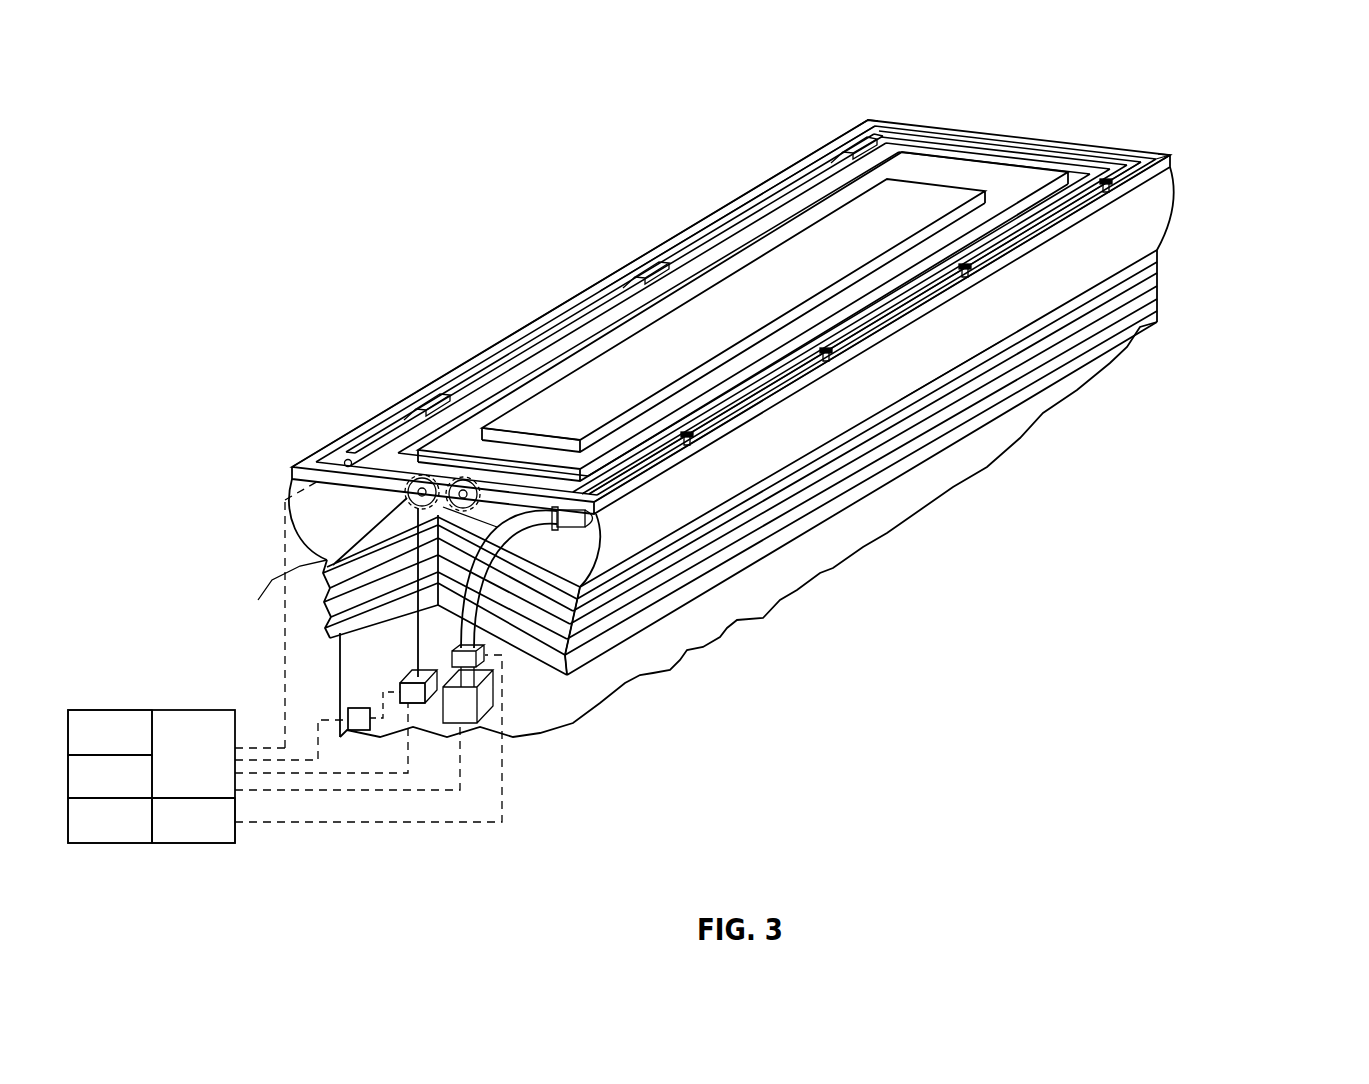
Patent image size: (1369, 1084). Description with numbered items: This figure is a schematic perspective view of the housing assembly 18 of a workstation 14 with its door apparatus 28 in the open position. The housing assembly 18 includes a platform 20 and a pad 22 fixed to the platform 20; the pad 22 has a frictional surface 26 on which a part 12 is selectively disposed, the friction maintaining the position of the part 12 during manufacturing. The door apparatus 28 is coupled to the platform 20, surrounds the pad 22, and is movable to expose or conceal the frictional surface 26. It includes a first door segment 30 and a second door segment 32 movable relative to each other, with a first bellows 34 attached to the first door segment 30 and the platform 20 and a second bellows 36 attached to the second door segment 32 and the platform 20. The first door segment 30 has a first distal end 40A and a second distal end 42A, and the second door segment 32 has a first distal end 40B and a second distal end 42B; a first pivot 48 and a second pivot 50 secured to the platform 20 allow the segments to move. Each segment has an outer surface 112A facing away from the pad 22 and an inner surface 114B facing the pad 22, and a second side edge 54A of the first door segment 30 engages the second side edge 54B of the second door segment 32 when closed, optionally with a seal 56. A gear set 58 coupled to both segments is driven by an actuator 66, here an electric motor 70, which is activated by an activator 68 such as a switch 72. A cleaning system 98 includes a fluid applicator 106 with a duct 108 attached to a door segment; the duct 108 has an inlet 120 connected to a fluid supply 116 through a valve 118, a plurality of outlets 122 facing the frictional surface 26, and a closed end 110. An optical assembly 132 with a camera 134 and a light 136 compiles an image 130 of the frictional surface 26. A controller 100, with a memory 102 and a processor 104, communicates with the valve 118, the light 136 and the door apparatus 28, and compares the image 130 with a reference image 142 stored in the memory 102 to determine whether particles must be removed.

The part 12 is at (933, 193).
The workstation 14 is at (1262, 193).
The housing assembly 18 is at (195, 429).
The platform 20 is at (1060, 163).
The pad 22 is at (983, 175).
The frictional surface 26 is at (486, 405).
The door apparatus 28 is at (252, 555).
The first door segment 30 is at (1147, 208).
The second door segment 32 is at (292, 480).
The first bellows 34 is at (1152, 250).
The second bellows 36 is at (340, 645).
The first distal end of the first door segment 40A is at (573, 553).
The first distal end of the second door segment 40B is at (327, 560).
The second distal end of the first door segment 42A is at (1176, 168).
The second distal end of the second door segment 42B is at (870, 116).
The first pivot 48 is at (405, 473).
The second pivot 50 is at (410, 500).
The second side edge of the first door segment 54A is at (775, 375).
The second side edge of the second door segment 54B is at (580, 300).
The seal 56 is at (763, 182).
The gear set 58 is at (350, 494).
The actuator 66 is at (405, 706).
The activator 68 is at (348, 710).
The electric motor 70 is at (412, 693).
The position sensor 72 is at (359, 719).
The cleaning system 98 is at (660, 458).
The controller 100 is at (160, 710).
The memory 102 is at (87, 748).
The processor 104 is at (87, 791).
The fluid applicator 106 is at (533, 770).
The duct 108 is at (603, 513).
The closed end 110 is at (1157, 142).
The outer surface of the first door segment 112A is at (1003, 313).
The inner surface of the second door segment 114B is at (708, 230).
The fluid supply 116 is at (492, 708).
The valve 118 is at (452, 658).
The inlet 120 is at (509, 607).
The outlets 122 is at (687, 432).
The image 130 is at (87, 835).
The optical assembly 132 is at (528, 345).
The camera 134 is at (437, 473).
The light 136 is at (430, 410).
The reference image 142 is at (170, 835).